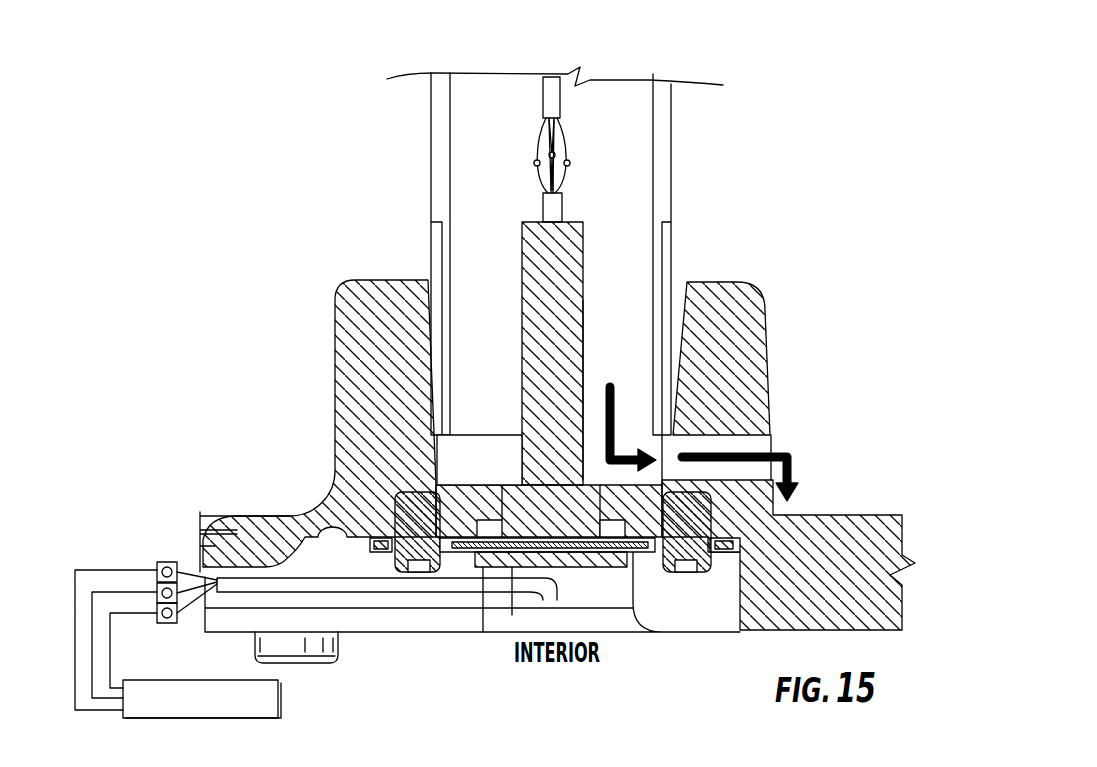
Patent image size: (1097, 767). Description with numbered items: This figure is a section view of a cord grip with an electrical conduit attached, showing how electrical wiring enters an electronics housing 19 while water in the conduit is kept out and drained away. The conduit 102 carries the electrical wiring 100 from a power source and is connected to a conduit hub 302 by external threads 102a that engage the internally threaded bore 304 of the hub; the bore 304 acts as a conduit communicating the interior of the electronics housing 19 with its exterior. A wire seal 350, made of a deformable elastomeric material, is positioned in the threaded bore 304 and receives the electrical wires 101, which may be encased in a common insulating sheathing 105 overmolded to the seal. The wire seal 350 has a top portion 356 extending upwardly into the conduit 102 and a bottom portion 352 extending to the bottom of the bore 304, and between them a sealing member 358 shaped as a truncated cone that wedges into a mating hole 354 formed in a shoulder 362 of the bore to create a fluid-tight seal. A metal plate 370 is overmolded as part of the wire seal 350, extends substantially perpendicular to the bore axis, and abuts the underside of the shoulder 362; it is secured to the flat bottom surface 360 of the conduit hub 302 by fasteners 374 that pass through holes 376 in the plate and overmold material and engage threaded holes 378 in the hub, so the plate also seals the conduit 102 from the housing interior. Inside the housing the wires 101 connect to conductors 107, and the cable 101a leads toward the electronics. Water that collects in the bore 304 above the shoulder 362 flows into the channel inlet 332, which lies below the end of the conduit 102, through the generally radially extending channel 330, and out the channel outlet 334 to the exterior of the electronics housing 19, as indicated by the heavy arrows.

The electronics housing 19 is at (865, 512).
The electrical wiring 100 is at (524, 141).
The electrical wires 101 is at (535, 185).
The cable 101a is at (433, 586).
The conduit 102 is at (431, 138).
The external threads 102a is at (671, 240).
The common insulating sheathing 105 is at (562, 208).
The conductors 107 is at (162, 556).
The conduit hub 302 is at (765, 306).
The threaded bore 304 is at (420, 280).
The channel 330 is at (760, 445).
The channel inlet 332 is at (665, 448).
The channel outlet 334 is at (772, 443).
The wire seal 350 is at (575, 262).
The bottom portion 352 is at (600, 566).
The mating hole 354 is at (502, 522).
The top portion 356 is at (583, 365).
The sealing member 358 is at (573, 502).
The flat bottom surface 360 is at (295, 514).
The shoulder 362 is at (487, 497).
The metal plate 370 is at (457, 548).
The fasteners 374 is at (396, 566).
The holes 376 is at (372, 538).
The threaded holes 378 is at (333, 470).